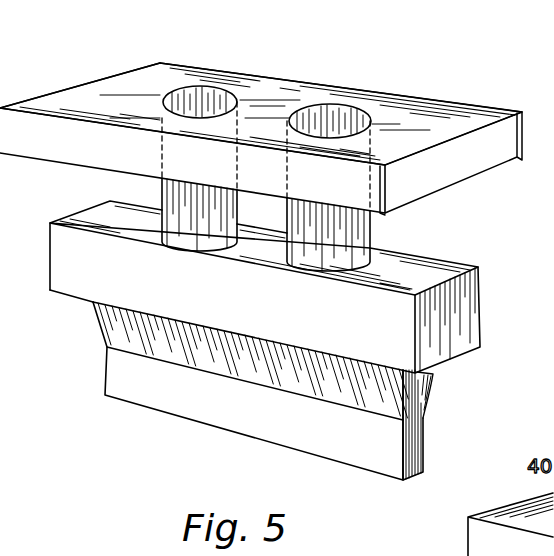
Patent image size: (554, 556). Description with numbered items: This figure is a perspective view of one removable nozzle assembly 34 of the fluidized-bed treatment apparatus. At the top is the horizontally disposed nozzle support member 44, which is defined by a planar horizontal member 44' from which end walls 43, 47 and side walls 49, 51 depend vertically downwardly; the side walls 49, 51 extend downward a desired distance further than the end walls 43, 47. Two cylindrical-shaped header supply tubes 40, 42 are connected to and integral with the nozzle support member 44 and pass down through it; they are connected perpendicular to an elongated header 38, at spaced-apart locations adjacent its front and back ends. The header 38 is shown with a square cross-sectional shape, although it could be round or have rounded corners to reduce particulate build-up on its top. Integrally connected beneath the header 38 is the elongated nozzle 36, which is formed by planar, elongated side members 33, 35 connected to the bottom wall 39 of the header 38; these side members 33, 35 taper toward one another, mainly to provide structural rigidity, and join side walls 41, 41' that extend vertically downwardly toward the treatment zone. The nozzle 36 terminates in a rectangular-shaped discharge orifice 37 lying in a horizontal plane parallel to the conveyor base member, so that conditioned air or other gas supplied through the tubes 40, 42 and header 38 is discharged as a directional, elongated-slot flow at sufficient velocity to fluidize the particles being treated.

The side member 33 is at (207, 347).
The nozzle assembly 34 is at (272, 114).
The side member 35 is at (428, 393).
The elongated nozzle 36 is at (305, 395).
The discharge orifice 37 is at (288, 417).
The header 38 is at (281, 287).
The bottom wall 39 is at (80, 300).
The header supply tube 40 is at (172, 196).
The side wall 41 is at (254, 413).
The side wall 41' is at (437, 425).
The header supply tube 42 is at (360, 233).
The end wall 43 is at (88, 84).
The nozzle support member 44 is at (200, 66).
The planar horizontal member 44' is at (381, 97).
The end wall 47 is at (467, 160).
The side wall 49 is at (65, 150).
The side wall 51 is at (387, 93).